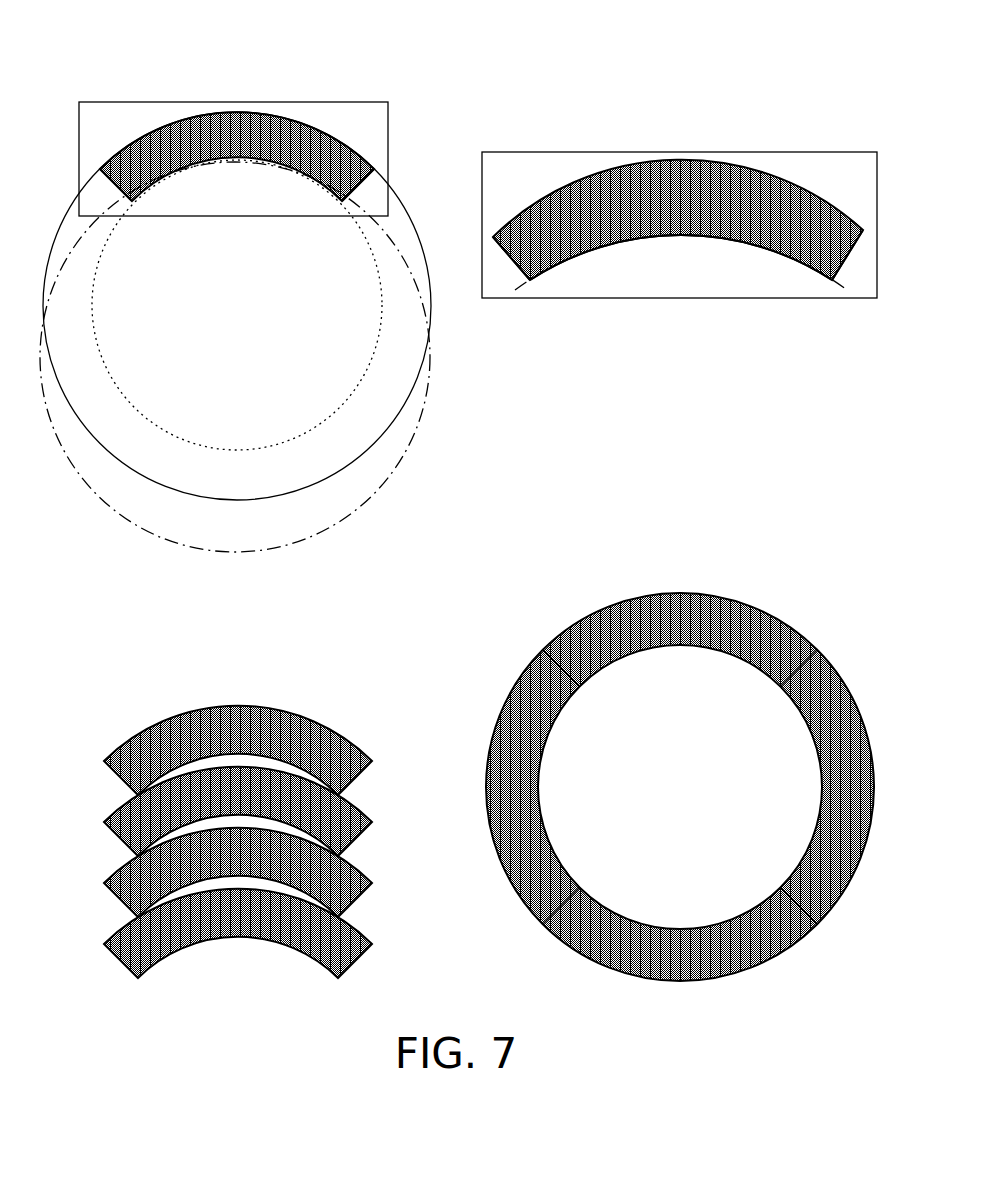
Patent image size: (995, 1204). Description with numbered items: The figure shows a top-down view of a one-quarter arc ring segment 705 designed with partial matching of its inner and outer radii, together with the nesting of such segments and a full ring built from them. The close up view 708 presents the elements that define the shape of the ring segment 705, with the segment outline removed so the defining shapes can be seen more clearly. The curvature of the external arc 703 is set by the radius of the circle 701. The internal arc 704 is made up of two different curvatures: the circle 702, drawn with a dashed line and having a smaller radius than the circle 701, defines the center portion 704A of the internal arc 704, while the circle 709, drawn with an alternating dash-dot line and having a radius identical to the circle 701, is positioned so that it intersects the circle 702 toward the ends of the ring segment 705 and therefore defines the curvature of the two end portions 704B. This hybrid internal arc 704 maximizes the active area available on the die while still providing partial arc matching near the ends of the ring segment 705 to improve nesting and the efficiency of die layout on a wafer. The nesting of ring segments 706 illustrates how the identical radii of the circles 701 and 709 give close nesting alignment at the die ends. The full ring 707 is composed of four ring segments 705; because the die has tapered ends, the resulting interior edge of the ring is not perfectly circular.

The circle 701 is at (129, 475).
The circle 702 is at (205, 452).
The external arc 703 is at (492, 225).
The internal arc 704 is at (332, 201).
The center portion of the internal arc 704A is at (583, 258).
The end portions of the internal arc 704B is at (577, 266).
The ring segment 705 is at (229, 136).
The nesting of ring segments 706 is at (351, 726).
The full ring 707 is at (807, 610).
The close up view 708 is at (494, 155).
The circle 709 is at (202, 560).